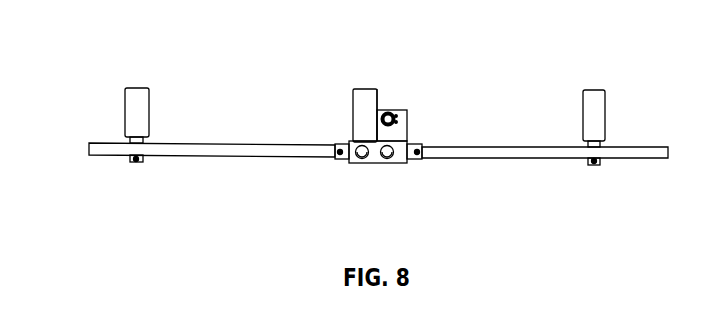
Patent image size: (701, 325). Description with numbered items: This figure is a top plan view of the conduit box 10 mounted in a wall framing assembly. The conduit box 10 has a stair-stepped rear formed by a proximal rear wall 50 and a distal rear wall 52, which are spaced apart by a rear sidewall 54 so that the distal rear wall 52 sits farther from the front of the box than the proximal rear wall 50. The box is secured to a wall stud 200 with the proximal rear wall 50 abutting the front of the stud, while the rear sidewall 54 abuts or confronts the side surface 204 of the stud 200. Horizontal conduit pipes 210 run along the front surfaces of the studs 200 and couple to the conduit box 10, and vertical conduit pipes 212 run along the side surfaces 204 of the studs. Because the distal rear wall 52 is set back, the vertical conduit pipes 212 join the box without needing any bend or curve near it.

The conduit box 10 is at (375, 162).
The proximal rear wall 50 is at (336, 120).
The distal rear wall 52 is at (392, 110).
The rear sidewall 54 is at (376, 111).
The wall stud 200 is at (138, 113).
The side surface 204 is at (377, 65).
The horizontal conduit pipes 210 is at (236, 156).
The vertical conduit pipes 212 is at (407, 110).